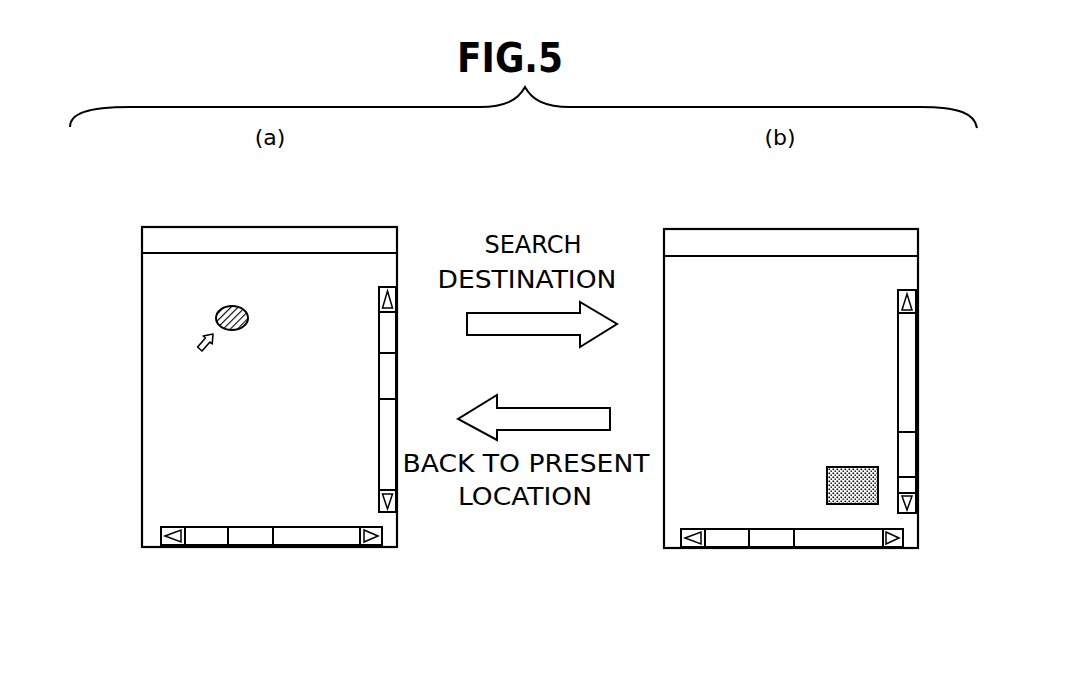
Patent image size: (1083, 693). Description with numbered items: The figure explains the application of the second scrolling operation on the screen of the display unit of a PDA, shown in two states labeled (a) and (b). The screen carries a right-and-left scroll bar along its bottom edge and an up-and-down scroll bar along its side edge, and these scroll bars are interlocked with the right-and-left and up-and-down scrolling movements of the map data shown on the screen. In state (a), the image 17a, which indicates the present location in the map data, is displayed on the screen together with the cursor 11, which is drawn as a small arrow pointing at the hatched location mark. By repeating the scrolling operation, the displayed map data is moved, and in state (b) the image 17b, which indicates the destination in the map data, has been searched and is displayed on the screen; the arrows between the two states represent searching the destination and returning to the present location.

The cursor 11 is at (203, 340).
The image indicating the present location 17a is at (250, 322).
The image indicating the destination 17b is at (825, 476).